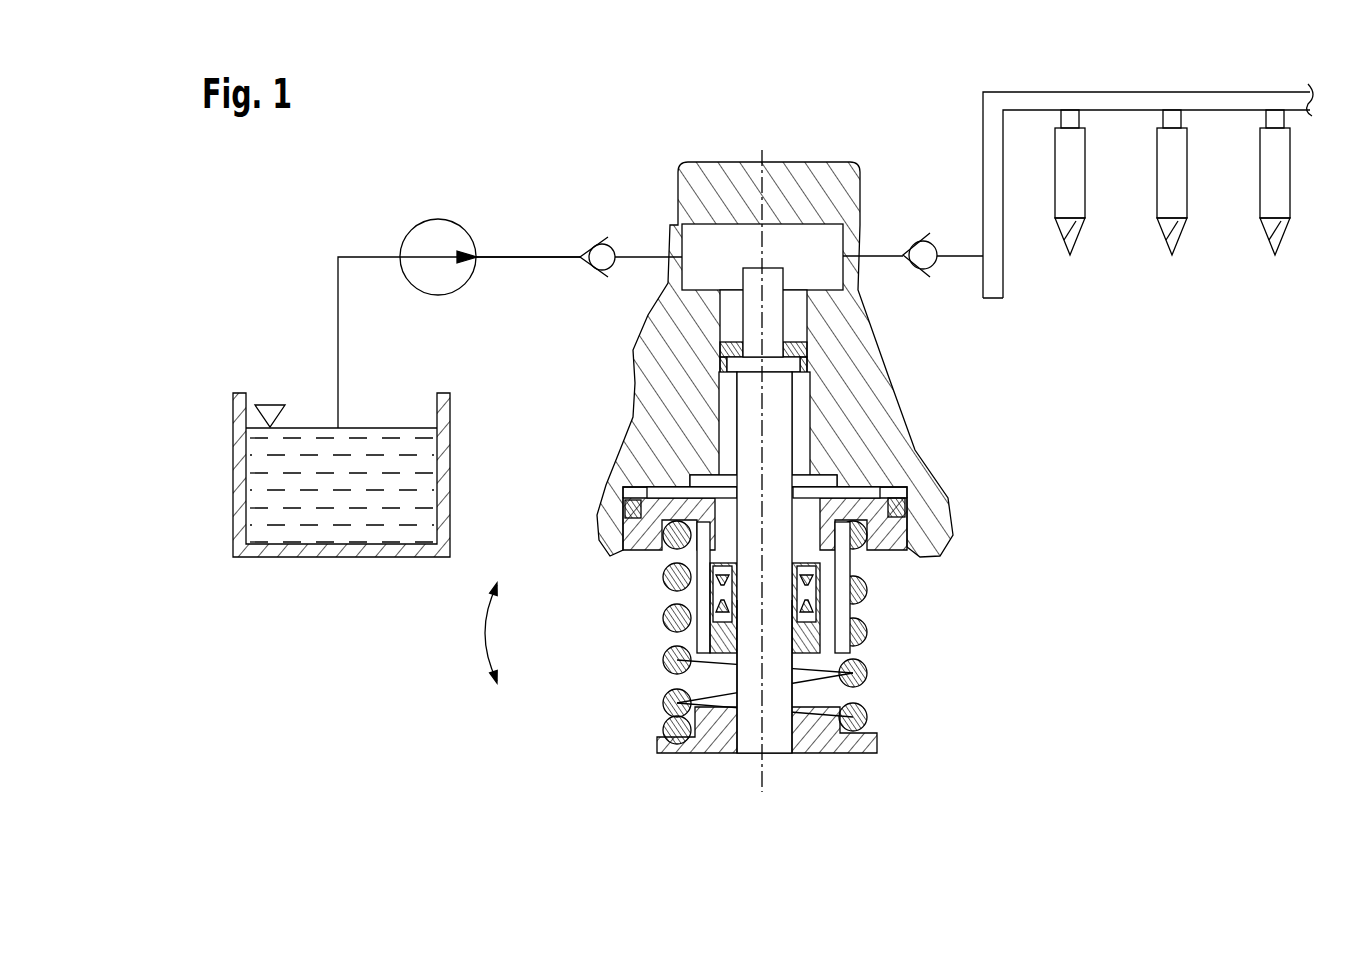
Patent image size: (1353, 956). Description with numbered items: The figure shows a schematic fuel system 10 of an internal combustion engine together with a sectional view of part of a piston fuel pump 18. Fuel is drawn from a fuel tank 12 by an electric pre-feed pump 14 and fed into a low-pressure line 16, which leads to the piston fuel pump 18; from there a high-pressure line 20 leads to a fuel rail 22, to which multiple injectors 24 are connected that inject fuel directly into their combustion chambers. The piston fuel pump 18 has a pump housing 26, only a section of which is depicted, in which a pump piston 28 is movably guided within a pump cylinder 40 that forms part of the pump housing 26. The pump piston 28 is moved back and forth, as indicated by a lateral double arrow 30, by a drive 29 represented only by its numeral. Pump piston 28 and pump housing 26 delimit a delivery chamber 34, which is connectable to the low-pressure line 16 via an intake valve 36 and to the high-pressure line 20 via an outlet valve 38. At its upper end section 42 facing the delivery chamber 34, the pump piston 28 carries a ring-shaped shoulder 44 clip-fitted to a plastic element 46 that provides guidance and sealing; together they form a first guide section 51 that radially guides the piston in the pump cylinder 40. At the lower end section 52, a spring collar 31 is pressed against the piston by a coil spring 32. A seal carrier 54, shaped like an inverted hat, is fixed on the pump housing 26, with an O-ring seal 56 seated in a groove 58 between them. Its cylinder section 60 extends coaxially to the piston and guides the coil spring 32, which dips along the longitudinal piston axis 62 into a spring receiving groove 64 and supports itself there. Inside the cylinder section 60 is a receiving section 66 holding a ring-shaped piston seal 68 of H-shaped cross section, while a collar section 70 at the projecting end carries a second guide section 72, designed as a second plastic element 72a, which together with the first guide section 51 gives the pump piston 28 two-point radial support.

The fuel system 10 is at (315, 247).
The fuel tank 12 is at (307, 428).
The electric pre-feed pump 14 is at (435, 233).
The low-pressure line 16 is at (527, 257).
The piston fuel pump 18 is at (950, 441).
The high-pressure line 20 is at (962, 257).
The fuel rail 22 is at (990, 103).
The injectors 24 is at (1064, 224).
The pump housing 26 is at (890, 468).
The pump piston 28 is at (748, 443).
The drive 29 is at (677, 807).
The lateral double arrow 30 is at (485, 633).
The spring collar 31 is at (845, 743).
The coil spring 32 is at (858, 668).
The delivery chamber 34 is at (693, 238).
The intake valve 36 is at (602, 253).
The outlet valve 38 is at (923, 252).
The pump cylinder 40 is at (813, 417).
The upper end section 42 is at (773, 323).
The shoulder 44 is at (730, 365).
The plastic element 46 is at (723, 353).
The first guide section 51 is at (703, 392).
The lower end section 52 is at (780, 697).
The seal carrier 54 is at (890, 535).
The O-ring seal 56 is at (903, 507).
The groove 58 is at (630, 512).
The cylinder section 60 is at (697, 602).
The longitudinal piston axis 62 is at (768, 787).
The spring receiving groove 64 is at (845, 555).
The receiving section 66 is at (692, 560).
The piston seal 68 is at (822, 607).
The collar section 70 is at (735, 683).
The second guide section 72 is at (700, 640).
The second plastic element 72a is at (715, 655).